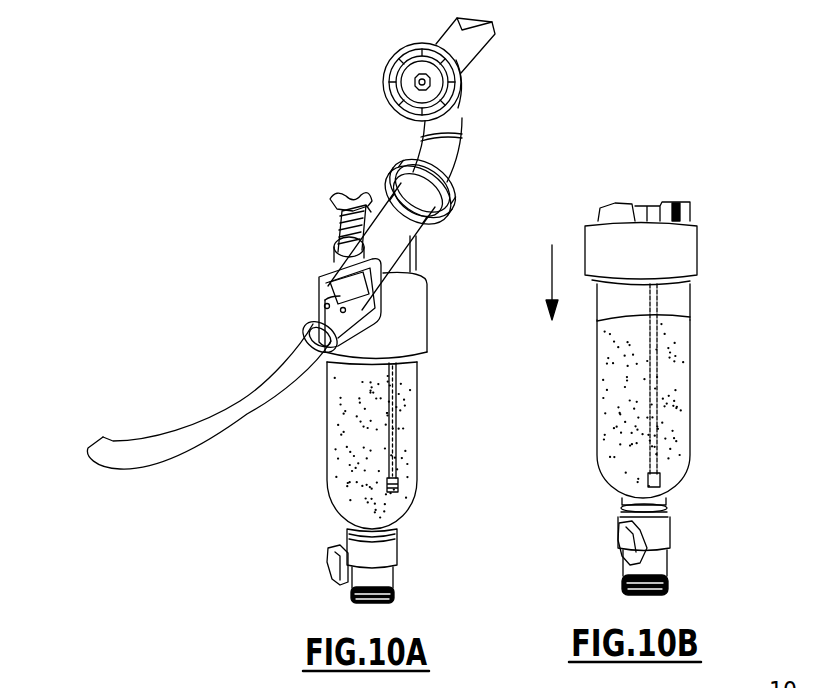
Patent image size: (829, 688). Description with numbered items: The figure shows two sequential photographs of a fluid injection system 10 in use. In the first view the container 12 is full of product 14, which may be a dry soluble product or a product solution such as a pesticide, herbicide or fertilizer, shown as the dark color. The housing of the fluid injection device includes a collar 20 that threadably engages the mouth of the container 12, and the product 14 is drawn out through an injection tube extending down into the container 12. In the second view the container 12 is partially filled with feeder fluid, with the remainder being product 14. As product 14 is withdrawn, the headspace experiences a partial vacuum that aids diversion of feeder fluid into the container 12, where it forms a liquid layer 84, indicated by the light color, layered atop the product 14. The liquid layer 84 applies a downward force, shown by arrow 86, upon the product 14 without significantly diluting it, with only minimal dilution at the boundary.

In FIG. 10A, the fluid injection system 10 is at (472, 153).
In FIG. 10B, the fluid injection system 10 is at (596, 211).
In FIG. 10A, the container 12 is at (328, 485).
In FIG. 10B, the container 12 is at (597, 380).
In FIG. 10A, the product 14 is at (407, 437).
In FIG. 10B, the product 14 is at (702, 497).
In FIG. 10A, the collar 20 is at (418, 310).
In FIG. 10B, the collar 20 is at (698, 231).
In FIG. 10B, the liquid layer 84 is at (700, 280).
In FIG. 10B, the arrow 86 is at (550, 254).